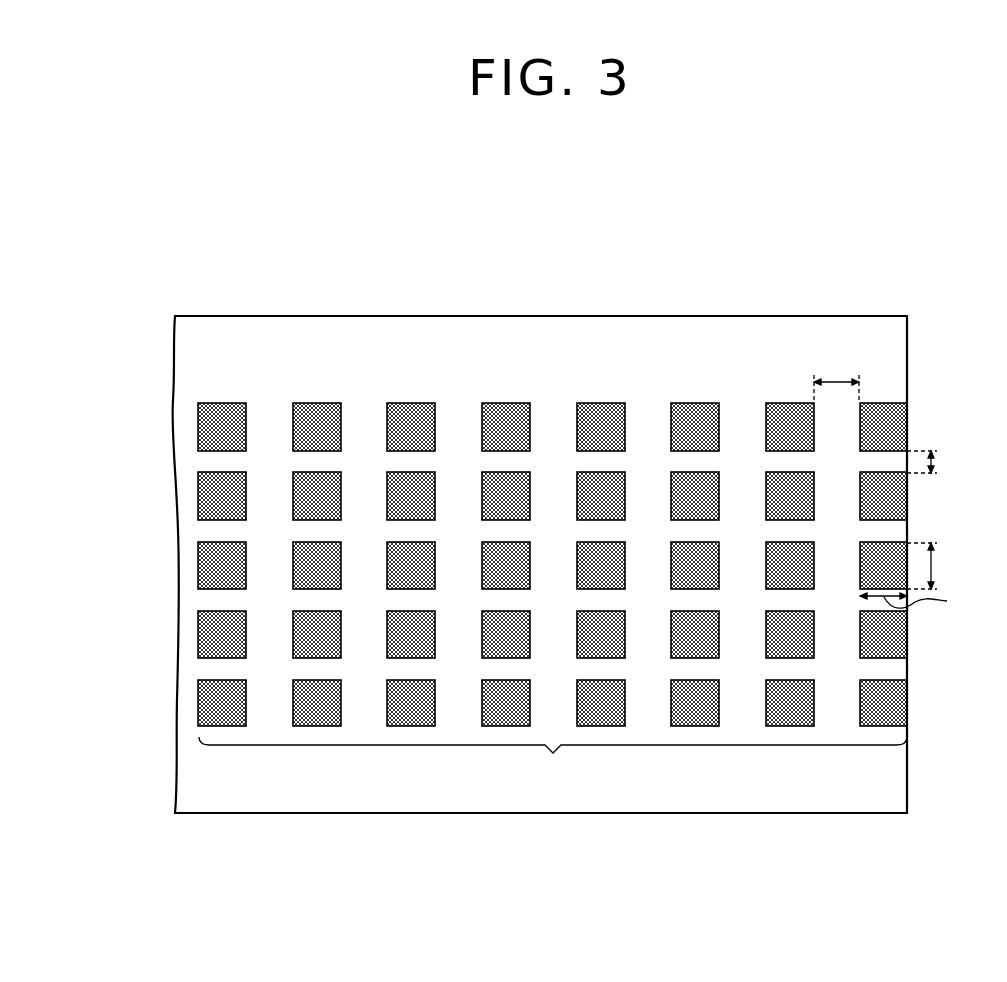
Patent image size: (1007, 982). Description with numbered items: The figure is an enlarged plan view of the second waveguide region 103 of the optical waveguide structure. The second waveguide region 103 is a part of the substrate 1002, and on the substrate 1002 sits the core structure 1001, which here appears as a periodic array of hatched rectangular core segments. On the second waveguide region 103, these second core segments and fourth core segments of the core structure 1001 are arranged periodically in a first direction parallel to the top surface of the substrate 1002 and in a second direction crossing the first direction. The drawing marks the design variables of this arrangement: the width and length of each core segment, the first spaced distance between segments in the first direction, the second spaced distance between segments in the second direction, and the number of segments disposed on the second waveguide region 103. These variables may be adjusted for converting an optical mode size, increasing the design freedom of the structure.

The second waveguide region 103 is at (899, 256).
The core structure 1001 is at (897, 635).
The substrate 1002 is at (897, 782).